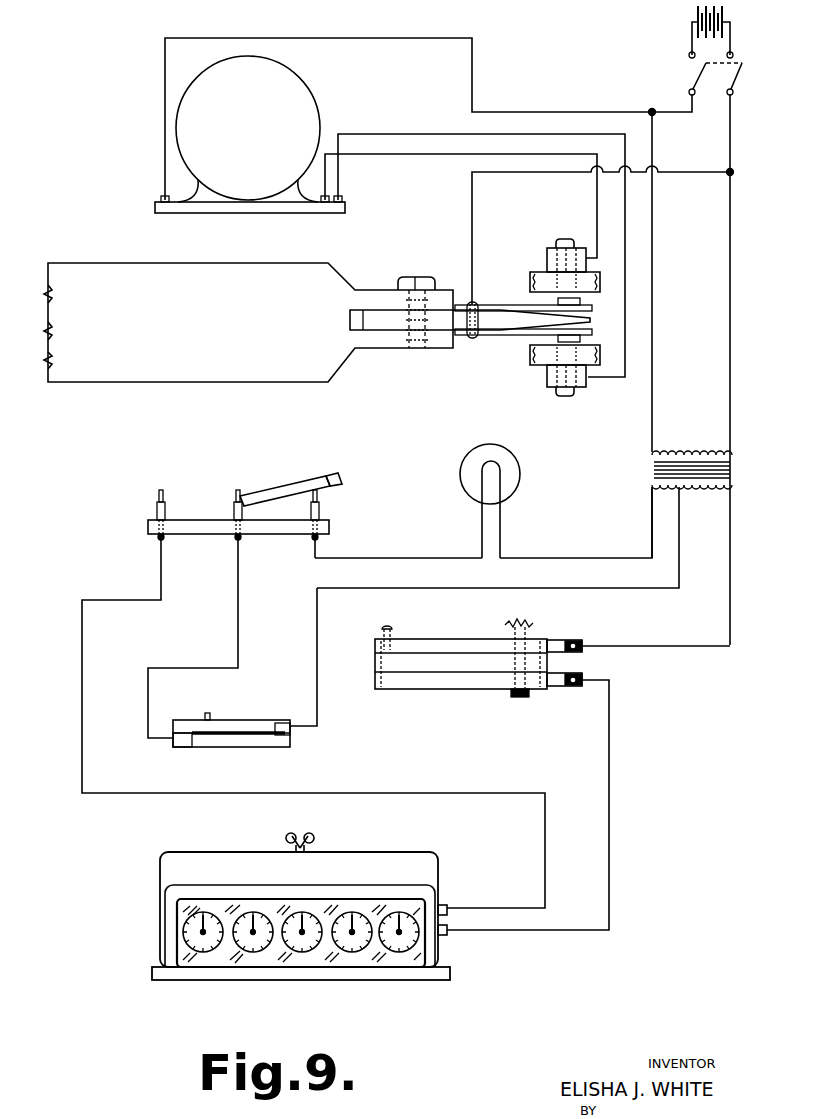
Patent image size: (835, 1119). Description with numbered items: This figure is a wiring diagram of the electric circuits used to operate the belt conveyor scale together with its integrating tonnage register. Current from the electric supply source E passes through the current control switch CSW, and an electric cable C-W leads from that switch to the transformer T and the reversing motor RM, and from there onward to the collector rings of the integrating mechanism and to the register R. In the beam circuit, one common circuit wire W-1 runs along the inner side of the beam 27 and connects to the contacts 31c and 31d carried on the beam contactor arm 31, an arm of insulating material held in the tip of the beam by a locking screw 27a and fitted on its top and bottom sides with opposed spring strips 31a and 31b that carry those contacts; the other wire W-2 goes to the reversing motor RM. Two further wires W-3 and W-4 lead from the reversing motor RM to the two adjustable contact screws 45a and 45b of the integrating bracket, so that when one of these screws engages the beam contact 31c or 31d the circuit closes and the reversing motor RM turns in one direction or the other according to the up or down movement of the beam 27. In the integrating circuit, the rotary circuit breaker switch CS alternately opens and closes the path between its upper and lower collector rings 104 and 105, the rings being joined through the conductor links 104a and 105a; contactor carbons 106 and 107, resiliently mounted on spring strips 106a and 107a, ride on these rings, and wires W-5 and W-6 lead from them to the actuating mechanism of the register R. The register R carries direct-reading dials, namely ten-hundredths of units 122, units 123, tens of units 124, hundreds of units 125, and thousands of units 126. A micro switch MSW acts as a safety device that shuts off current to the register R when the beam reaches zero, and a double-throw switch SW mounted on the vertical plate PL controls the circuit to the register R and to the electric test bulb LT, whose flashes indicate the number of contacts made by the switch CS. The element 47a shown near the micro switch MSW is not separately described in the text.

The electric supply source E is at (725, 20).
The current control switch CSW is at (700, 71).
The circuit wire W-2 is at (535, 112).
The electric cable C-W is at (680, 113).
The circuit wire W-3 is at (432, 124).
The circuit wire W-4 is at (445, 157).
The common circuit wire W-1 is at (521, 173).
The reversing motor RM is at (250, 134).
The beam 27 is at (182, 366).
The locking screw 27a is at (409, 278).
The contactor arm 31 is at (497, 323).
The spring strip 31a is at (531, 305).
The spring strip 31b is at (516, 336).
The contact 31c is at (581, 302).
The contact 31d is at (581, 338).
The contact screw 45a is at (565, 239).
The contact screw 45b is at (568, 397).
The electric test bulb LT is at (517, 461).
The transformer T is at (735, 477).
The vertical plate PL is at (278, 535).
The double-throw switch SW is at (274, 496).
The micro switch MSW is at (247, 744).
The switch blade 47a is at (232, 728).
The circuit breaker switch CS is at (420, 690).
The upper collector ring 104 is at (448, 647).
The lower collector ring 105 is at (472, 679).
The electric conductor link 104a is at (381, 636).
The electric conductor link 105a is at (537, 692).
The contactor carbon 106 is at (560, 640).
The spring strip 106a is at (585, 651).
The contactor carbon 107 is at (558, 681).
The spring strip 107a is at (583, 688).
The circuit wire W-5 is at (668, 640).
The circuit wire W-6 is at (610, 772).
The tonnage register R is at (160, 912).
The dial 126 is at (209, 952).
The dial 125 is at (258, 952).
The dial 124 is at (307, 952).
The dial 123 is at (355, 952).
The dial 122 is at (399, 952).